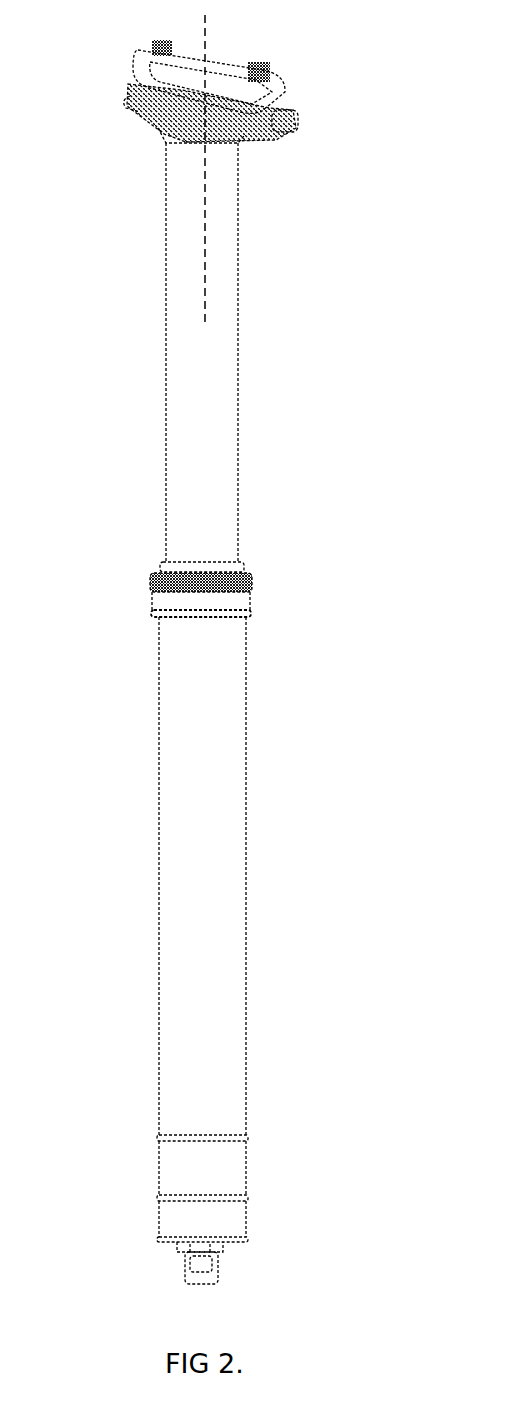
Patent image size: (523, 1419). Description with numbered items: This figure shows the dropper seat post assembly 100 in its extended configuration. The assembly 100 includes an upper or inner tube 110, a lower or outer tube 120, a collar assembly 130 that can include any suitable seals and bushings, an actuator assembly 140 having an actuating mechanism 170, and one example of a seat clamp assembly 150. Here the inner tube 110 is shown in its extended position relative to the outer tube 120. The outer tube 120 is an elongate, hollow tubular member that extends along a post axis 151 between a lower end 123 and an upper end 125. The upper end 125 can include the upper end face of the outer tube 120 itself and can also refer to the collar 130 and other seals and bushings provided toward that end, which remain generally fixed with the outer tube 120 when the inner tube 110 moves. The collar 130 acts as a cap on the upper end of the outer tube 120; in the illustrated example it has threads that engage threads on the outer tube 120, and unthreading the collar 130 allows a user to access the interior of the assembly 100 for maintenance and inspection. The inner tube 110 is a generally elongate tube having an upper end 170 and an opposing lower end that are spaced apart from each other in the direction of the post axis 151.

The seat post assembly 100 is at (375, 74).
The inner tube 110 is at (165, 483).
The outer tube 120 is at (243, 716).
The lower end 123 is at (266, 633).
The upper end 125 is at (260, 1210).
The collar assembly 130 is at (250, 579).
The actuator assembly 140 is at (224, 1250).
The seat clamp assembly 150 is at (137, 62).
The post axis 151 is at (204, 319).
The actuating mechanism 170 is at (266, 168).